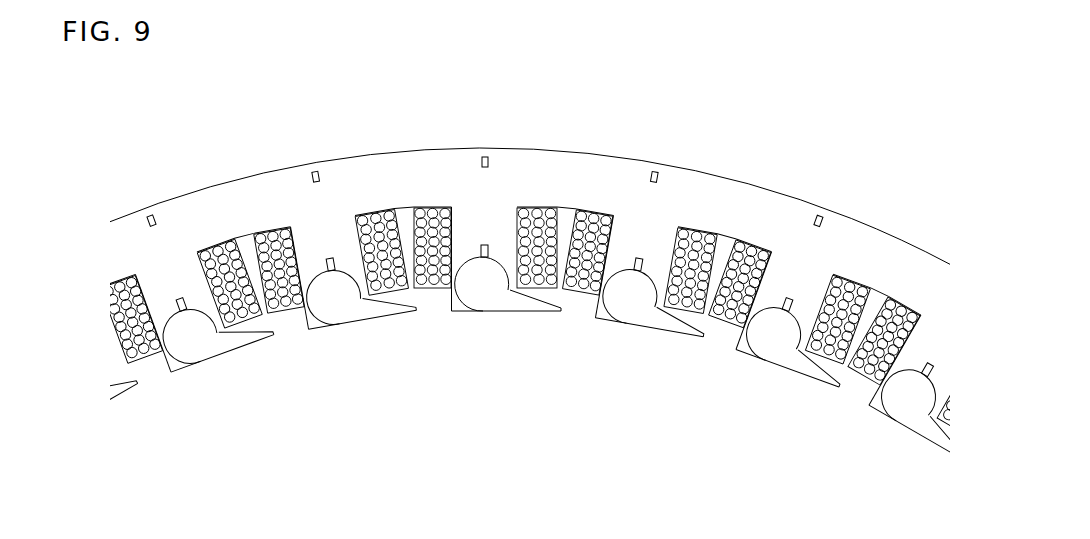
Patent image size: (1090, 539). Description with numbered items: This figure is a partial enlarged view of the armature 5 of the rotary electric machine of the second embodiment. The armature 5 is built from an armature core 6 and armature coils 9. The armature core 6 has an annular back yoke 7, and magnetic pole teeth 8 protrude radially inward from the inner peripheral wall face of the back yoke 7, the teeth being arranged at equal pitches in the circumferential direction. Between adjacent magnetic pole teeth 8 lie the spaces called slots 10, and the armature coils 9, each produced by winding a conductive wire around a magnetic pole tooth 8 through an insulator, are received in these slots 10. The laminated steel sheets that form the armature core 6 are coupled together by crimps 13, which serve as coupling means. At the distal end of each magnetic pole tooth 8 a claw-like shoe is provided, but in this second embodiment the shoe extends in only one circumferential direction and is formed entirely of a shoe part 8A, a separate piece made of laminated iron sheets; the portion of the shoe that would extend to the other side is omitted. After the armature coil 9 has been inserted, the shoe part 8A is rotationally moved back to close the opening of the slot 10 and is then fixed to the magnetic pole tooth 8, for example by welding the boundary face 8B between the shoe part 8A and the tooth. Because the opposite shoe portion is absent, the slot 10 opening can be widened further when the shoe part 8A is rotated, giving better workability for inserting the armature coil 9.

The armature 5 is at (790, 177).
The armature core 6 is at (707, 172).
The back yoke 7 is at (544, 176).
The magnetic pole tooth 8 is at (508, 375).
The shoe part 8A is at (678, 330).
The boundary face 8B is at (621, 323).
The armature coil 9 is at (428, 288).
The slot 10 is at (566, 308).
The crimp 13 is at (474, 248).